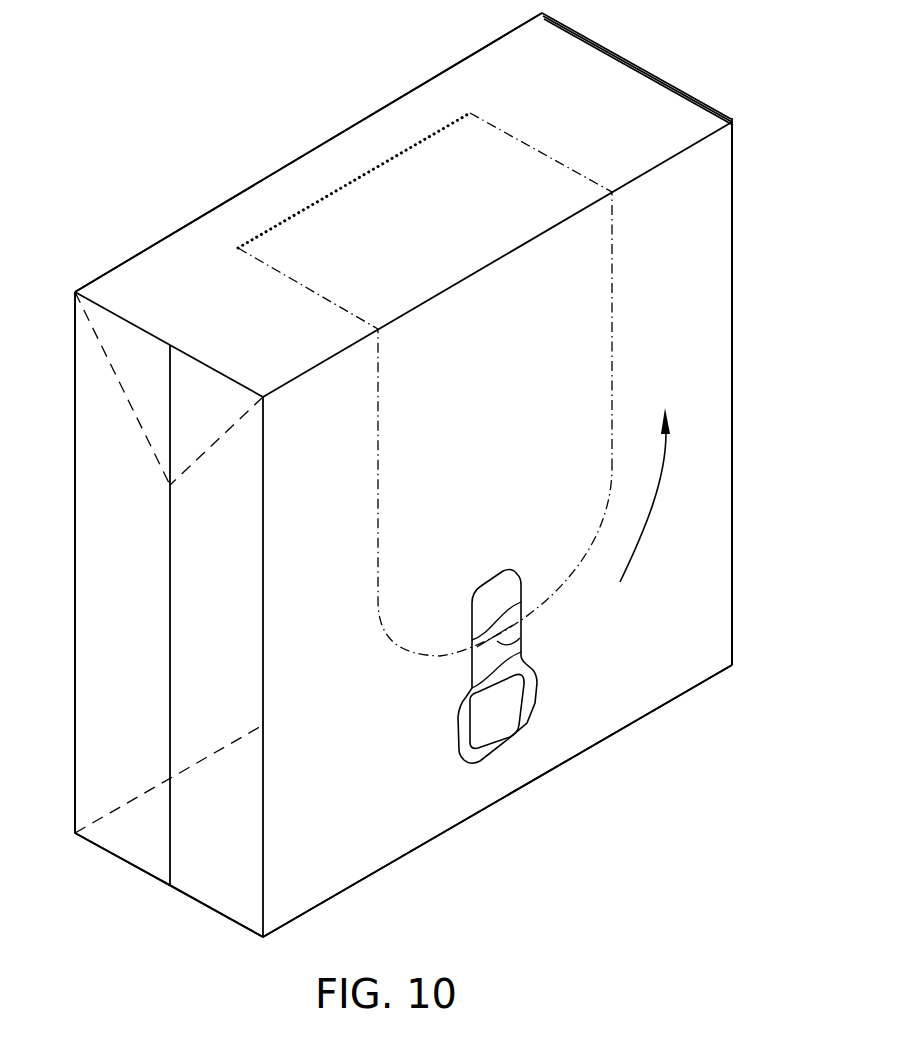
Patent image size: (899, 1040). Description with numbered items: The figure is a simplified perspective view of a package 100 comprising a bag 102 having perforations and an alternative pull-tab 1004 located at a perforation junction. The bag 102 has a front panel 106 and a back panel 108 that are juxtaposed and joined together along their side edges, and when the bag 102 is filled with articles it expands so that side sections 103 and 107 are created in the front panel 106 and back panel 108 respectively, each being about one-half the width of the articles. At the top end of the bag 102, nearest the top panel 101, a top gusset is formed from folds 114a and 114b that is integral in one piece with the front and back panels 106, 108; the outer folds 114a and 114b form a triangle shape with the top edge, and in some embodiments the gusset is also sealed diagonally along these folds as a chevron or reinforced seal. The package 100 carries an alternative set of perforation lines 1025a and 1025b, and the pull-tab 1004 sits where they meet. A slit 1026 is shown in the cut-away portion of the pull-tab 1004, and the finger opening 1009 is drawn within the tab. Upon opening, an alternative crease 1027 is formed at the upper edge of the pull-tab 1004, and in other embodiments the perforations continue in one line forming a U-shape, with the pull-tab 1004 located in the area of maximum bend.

The package 100 is at (248, 69).
The top panel 101 is at (192, 227).
The bag 102 is at (733, 395).
The side section 103 is at (215, 906).
The front panel 106 is at (452, 818).
The side section 107 is at (118, 850).
The back panel 108 is at (80, 711).
The fold 114a is at (146, 440).
The fold 114b is at (190, 465).
The pull-tab 1004 is at (457, 740).
The finger opening 1009 is at (510, 705).
The perforation line 1025a is at (378, 467).
The perforation line 1025b is at (612, 325).
The slit 1026 is at (497, 642).
The crease 1027 is at (357, 180).